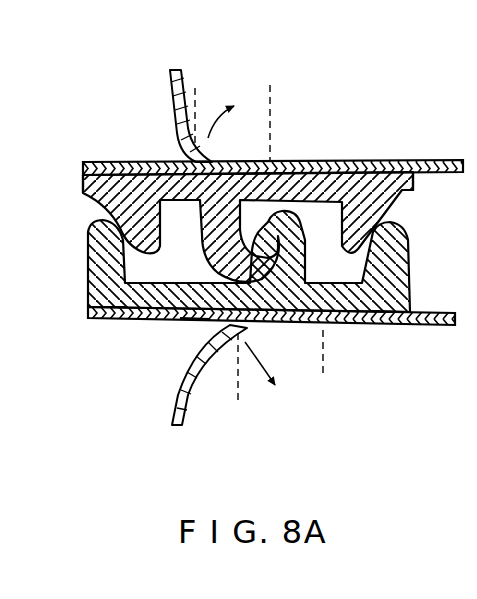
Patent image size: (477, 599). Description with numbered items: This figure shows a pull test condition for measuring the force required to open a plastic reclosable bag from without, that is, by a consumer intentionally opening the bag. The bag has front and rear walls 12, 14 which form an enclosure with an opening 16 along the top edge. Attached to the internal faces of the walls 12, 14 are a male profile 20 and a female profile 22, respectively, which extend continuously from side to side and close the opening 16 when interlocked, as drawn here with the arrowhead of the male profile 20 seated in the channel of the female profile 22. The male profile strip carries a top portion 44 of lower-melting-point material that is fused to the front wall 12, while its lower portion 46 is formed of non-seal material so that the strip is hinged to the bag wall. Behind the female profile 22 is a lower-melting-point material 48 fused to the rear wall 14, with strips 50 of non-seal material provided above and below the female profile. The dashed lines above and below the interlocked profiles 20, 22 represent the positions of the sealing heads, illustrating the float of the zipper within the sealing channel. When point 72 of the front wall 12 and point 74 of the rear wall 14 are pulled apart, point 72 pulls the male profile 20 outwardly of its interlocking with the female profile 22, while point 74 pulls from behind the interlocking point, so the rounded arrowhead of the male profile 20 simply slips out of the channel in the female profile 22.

The front wall 12 is at (420, 160).
The rear wall 14 is at (372, 327).
The opening 16 is at (68, 226).
The male profile 20 is at (358, 218).
The female profile 22 is at (395, 292).
The top portion of the interlayer 44 is at (83, 174).
The lower portion of the interlayer 46 is at (415, 178).
The lower-melting-point material 48 is at (193, 321).
The strips of non-seal material 50 is at (88, 312).
The point of bag wall 72 is at (180, 72).
The point of bag wall 74 is at (188, 405).